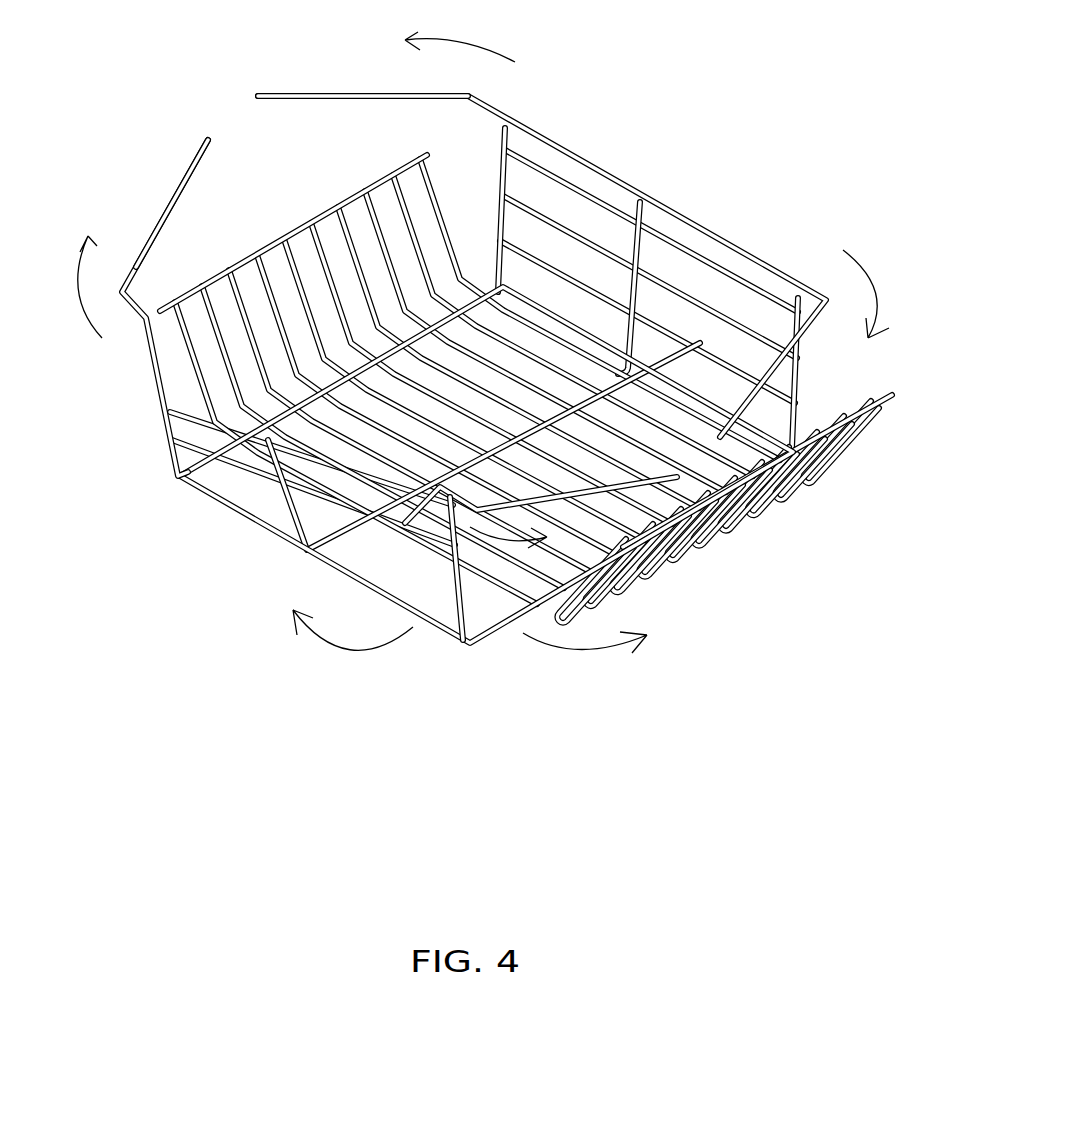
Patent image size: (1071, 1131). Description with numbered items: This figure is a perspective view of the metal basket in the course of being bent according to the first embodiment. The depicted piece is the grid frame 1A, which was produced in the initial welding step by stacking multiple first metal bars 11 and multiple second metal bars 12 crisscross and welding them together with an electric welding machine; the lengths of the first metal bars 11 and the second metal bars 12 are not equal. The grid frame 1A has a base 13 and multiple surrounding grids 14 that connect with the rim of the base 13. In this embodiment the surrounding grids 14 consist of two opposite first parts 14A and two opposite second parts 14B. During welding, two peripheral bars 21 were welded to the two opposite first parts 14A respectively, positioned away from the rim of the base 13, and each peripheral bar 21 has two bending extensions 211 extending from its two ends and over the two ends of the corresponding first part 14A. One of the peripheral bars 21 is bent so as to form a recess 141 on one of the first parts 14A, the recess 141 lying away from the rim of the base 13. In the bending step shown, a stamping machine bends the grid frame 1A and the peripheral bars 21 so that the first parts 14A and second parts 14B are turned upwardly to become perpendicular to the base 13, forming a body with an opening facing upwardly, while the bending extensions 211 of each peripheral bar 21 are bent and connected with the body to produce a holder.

The grid frame 1A is at (152, 404).
The first metal bars 11 is at (498, 620).
The second metal bars 12 is at (450, 600).
The base 13 is at (500, 398).
The surrounding grids 14 is at (697, 532).
The first parts 14A is at (658, 290).
The second parts 14B is at (300, 235).
The recess 141 is at (302, 462).
The peripheral bars 21 is at (608, 180).
The bending extensions 211 is at (292, 92).